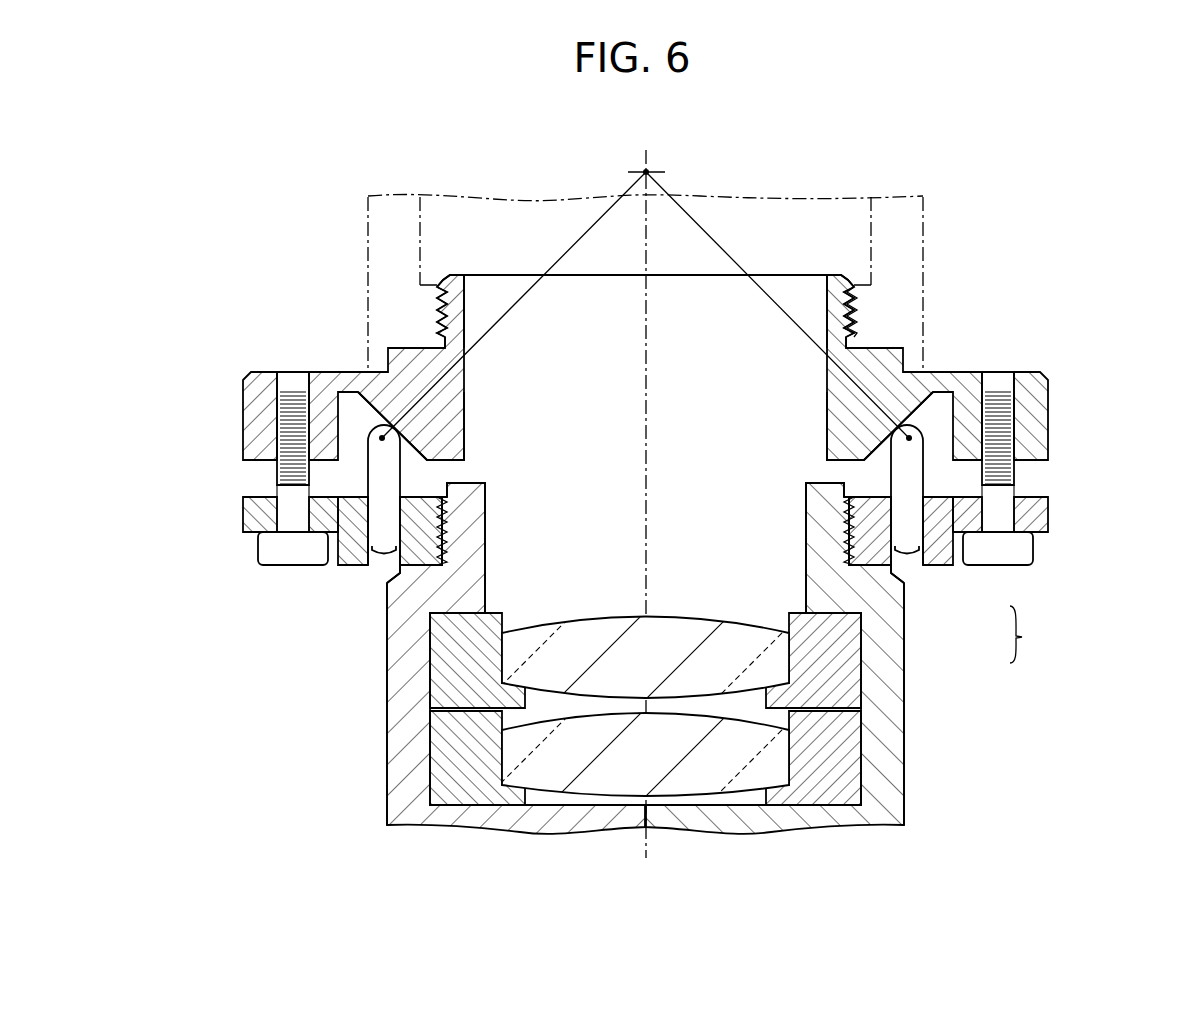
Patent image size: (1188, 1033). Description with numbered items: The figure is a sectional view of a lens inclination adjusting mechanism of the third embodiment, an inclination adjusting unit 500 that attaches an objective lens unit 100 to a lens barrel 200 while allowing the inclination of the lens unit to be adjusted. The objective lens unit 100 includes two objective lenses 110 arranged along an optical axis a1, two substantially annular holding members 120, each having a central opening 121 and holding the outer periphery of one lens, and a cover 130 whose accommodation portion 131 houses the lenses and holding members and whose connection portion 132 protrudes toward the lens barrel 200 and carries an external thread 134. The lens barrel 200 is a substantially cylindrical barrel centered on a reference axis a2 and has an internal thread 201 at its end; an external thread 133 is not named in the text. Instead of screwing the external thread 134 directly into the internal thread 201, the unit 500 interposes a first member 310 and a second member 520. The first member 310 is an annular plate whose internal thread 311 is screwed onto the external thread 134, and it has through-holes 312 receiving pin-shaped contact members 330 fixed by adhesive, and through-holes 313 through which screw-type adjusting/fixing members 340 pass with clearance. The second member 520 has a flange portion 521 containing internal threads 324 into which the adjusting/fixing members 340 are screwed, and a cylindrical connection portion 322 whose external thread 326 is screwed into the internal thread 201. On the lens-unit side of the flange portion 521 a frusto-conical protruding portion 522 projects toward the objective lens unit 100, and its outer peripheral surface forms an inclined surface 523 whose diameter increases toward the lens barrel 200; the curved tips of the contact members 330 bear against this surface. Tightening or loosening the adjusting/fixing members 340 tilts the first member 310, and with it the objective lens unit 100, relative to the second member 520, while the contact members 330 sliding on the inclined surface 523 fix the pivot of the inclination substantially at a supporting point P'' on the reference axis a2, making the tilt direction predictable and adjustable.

The objective lens unit 100 is at (1010, 751).
The objective lens 110 is at (775, 752).
The holding member 120 is at (848, 672).
The opening 121 is at (800, 818).
The cover 130 is at (730, 620).
The accommodation portion 131 is at (893, 659).
The connection portion 132 is at (906, 583).
The cylindrical portion of lens barrel 133 is at (806, 512).
The external thread 134 is at (925, 562).
The lens barrel 200 is at (924, 265).
The internal thread 201 is at (845, 313).
The first member 310 is at (218, 603).
The internal thread 311 is at (442, 560).
The through-hole 312 is at (338, 565).
The through-hole 313 is at (262, 517).
The connection portion 322 is at (437, 292).
The internal thread 324 is at (243, 376).
The external thread 326 is at (437, 326).
The contact member 330 is at (383, 530).
The adjusting/fixing member 340 is at (300, 480).
The inclination adjusting unit 500 is at (1068, 420).
The second member 520 is at (206, 336).
The flange portion 521 is at (243, 440).
The protruding portion 522 is at (455, 418).
The inclined surface 523 is at (277, 406).
The optical axis a1 is at (652, 545).
The reference axis a2 is at (643, 164).
The supporting point P'' is at (675, 151).